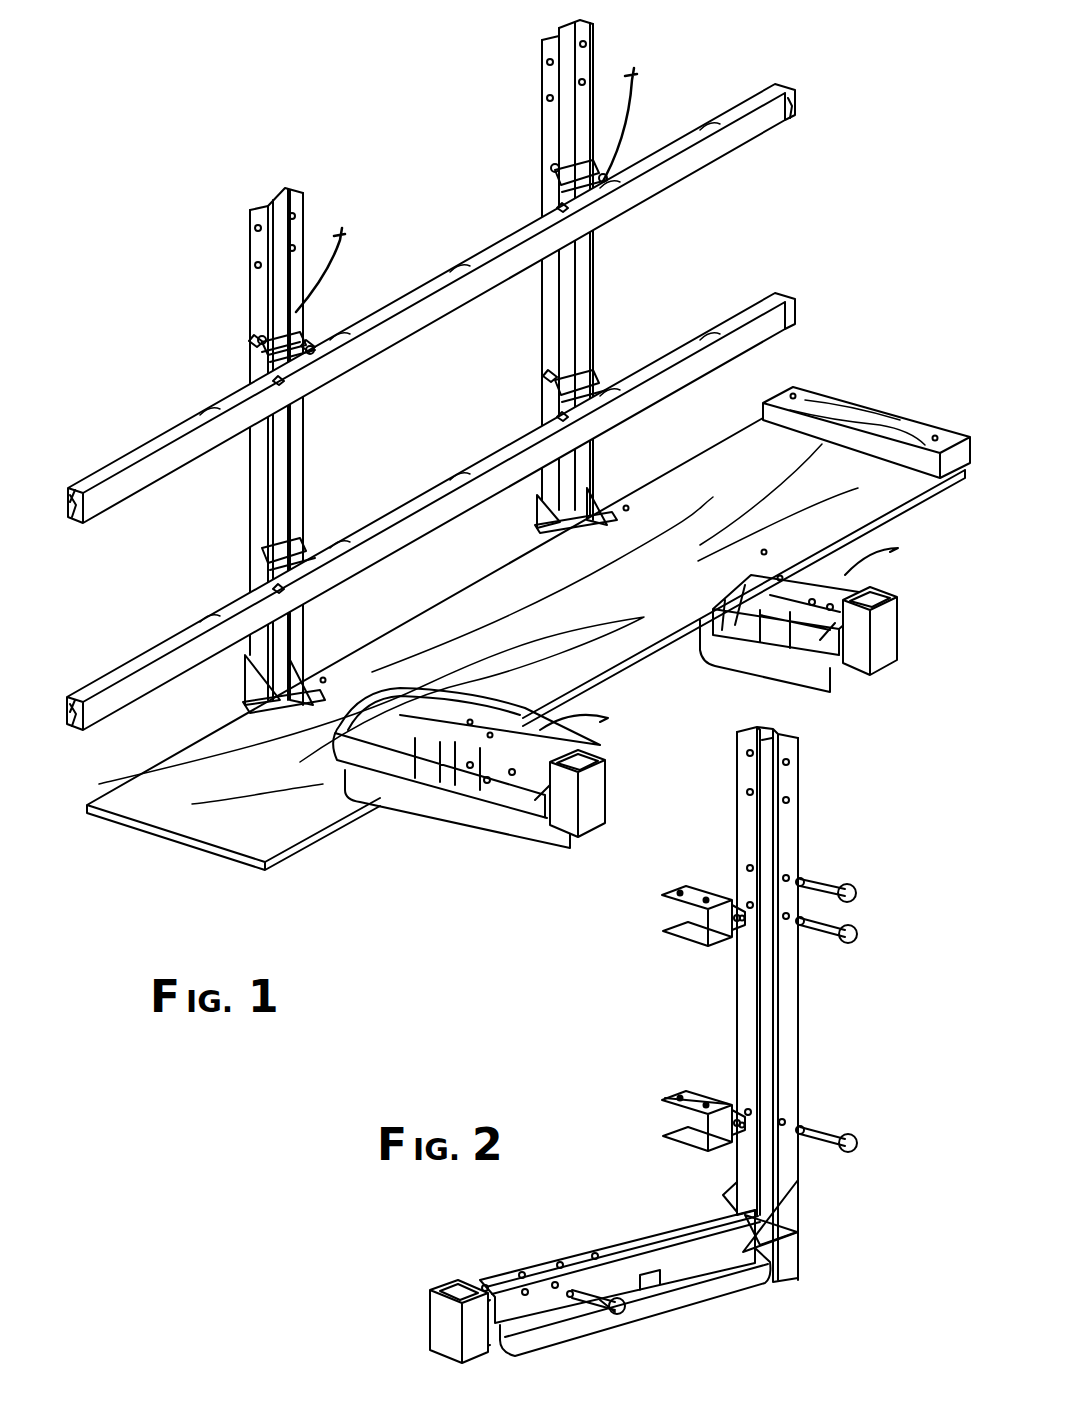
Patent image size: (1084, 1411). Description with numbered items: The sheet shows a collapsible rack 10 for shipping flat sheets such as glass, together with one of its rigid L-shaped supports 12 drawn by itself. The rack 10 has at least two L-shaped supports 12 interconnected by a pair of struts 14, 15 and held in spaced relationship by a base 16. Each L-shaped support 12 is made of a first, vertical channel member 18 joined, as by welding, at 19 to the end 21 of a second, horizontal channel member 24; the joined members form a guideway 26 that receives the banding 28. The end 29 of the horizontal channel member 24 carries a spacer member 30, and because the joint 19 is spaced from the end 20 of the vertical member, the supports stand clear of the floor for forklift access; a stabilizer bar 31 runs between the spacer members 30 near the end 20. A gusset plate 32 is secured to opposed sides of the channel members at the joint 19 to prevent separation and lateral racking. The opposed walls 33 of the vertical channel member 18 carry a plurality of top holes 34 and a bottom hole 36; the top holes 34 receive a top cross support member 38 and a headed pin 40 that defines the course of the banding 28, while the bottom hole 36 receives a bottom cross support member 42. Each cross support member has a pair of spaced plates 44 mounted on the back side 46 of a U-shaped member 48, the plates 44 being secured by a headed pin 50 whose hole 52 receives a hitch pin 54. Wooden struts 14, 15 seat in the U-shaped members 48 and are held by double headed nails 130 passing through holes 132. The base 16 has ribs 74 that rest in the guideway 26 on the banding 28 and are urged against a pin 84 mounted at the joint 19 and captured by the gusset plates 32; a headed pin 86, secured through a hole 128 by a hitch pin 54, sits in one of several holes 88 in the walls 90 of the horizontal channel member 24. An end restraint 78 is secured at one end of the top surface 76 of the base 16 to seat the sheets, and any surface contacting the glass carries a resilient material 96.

In FIG. 1, the rack 10 is at (688, 102).
In FIG. 1, the L-shaped support 12 is at (242, 270).
In FIG. 2, the L-shaped support 12 is at (815, 813).
In FIG. 1, the strut 14 is at (778, 86).
In FIG. 1, the strut 15 is at (778, 290).
In FIG. 1, the base 16 is at (730, 410).
In FIG. 1, the first channel member 18 is at (250, 304).
In FIG. 2, the first channel member 18 is at (800, 1020).
In FIG. 1, the joint 19 is at (298, 670).
In FIG. 2, the end of channel member 20 is at (782, 1278).
In FIG. 2, the end of second channel member 21 is at (735, 1212).
In FIG. 1, the second channel member 24 is at (855, 586).
In FIG. 2, the second channel member 24 is at (590, 1256).
In FIG. 1, the guideway 26 is at (283, 190).
In FIG. 2, the guideway 26 is at (770, 732).
In FIG. 1, the banding 28 is at (345, 238).
In FIG. 2, the end of horizontal channel member 29 is at (498, 1340).
In FIG. 1, the spacer member 30 is at (885, 645).
In FIG. 2, the spacer member 30 is at (430, 1320).
In FIG. 1, the stabilizer bar 31 is at (752, 638).
In FIG. 2, the stabilizer bar 31 is at (688, 1304).
In FIG. 1, the gusset plate 32 is at (300, 658).
In FIG. 2, the gusset plate 32 is at (733, 1194).
In FIG. 1, the opposed walls 33 is at (250, 212).
In FIG. 2, the opposed walls 33 is at (748, 726).
In FIG. 1, the top holes 34 is at (296, 244).
In FIG. 2, the top holes 34 is at (748, 788).
In FIG. 2, the bottom hole 36 is at (752, 1110).
In FIG. 1, the top cross support member 38 is at (312, 338).
In FIG. 2, the top cross support member 38 is at (668, 886).
In FIG. 1, the headed pin 40 is at (292, 328).
In FIG. 2, the headed pin 40 is at (818, 888).
In FIG. 1, the bottom cross support member 42 is at (310, 538).
In FIG. 2, the bottom cross support member 42 is at (668, 1086).
In FIG. 1, the plates 44 is at (262, 376).
In FIG. 2, the plates 44 is at (742, 916).
In FIG. 2, the back side 46 is at (730, 900).
In FIG. 1, the U-shaped member 48 is at (300, 363).
In FIG. 2, the U-shaped member 48 is at (665, 926).
In FIG. 2, the headed pin 50 is at (825, 923).
In FIG. 2, the hole 52 is at (852, 903).
In FIG. 1, the hitch pin 54 is at (730, 628).
In FIG. 1, the ribs 74 is at (780, 568).
In FIG. 1, the top surface 76 is at (705, 468).
In FIG. 1, the end restraint 78 is at (868, 410).
In FIG. 1, the pin 84 is at (282, 688).
In FIG. 2, the pin 84 is at (755, 1223).
In FIG. 1, the headed pin 86 is at (812, 598).
In FIG. 2, the headed pin 86 is at (598, 1310).
In FIG. 1, the holes 88 is at (852, 612).
In FIG. 2, the holes 88 is at (500, 1278).
In FIG. 2, the walls 90 is at (650, 1243).
In FIG. 1, the resilient material 96 is at (790, 102).
In FIG. 2, the hole 128 is at (805, 878).
In FIG. 1, the double headed nails 130 is at (285, 364).
In FIG. 2, the holes 132 is at (680, 893).